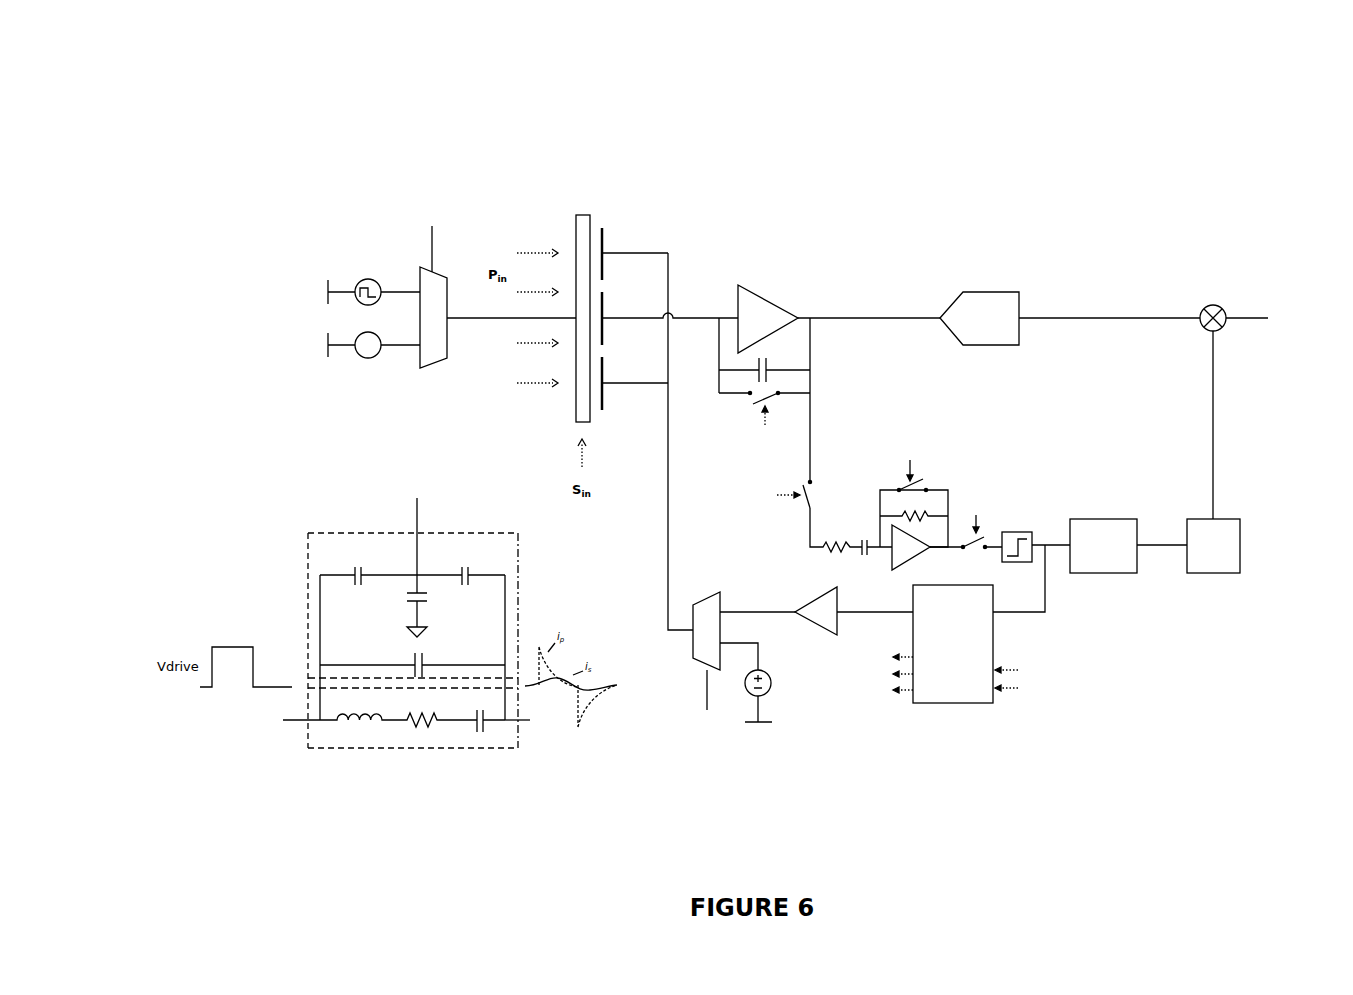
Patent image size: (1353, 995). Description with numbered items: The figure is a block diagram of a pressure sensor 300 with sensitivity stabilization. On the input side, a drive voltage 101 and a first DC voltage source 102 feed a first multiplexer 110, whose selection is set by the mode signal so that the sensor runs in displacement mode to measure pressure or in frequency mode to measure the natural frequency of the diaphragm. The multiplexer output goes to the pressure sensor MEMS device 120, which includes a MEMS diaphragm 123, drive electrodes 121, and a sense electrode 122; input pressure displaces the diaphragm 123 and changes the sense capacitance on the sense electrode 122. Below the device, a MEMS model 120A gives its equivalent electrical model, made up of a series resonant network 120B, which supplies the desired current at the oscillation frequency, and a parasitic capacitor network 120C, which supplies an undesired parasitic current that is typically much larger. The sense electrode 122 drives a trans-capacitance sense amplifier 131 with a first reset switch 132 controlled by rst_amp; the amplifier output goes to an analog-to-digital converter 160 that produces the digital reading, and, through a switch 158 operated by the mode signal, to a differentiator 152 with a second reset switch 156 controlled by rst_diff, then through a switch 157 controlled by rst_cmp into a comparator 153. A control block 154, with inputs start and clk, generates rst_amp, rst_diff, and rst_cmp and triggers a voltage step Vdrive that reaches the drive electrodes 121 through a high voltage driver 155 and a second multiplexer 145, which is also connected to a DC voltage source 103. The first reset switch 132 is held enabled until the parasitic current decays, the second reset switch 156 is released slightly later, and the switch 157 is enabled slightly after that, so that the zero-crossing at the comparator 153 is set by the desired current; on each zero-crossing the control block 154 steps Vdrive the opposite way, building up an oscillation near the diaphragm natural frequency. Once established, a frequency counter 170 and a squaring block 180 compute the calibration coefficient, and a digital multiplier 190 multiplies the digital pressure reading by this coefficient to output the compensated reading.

The drive voltage 101 is at (362, 279).
The first DC voltage source 102 is at (366, 366).
The DC voltage source 103 is at (772, 687).
The first multiplexer 110 is at (418, 263).
The pressure sensor MEMS device 120 is at (662, 165).
The MEMS model 120A is at (518, 475).
The series resonant network 120B is at (350, 752).
The parasitic capacitor network 120C is at (330, 533).
The drive electrodes 121 is at (615, 237).
The sense electrode 122 is at (615, 304).
The MEMS diaphragm 123 is at (570, 215).
The trans-capacitance sense amplifier 131 is at (765, 281).
The first reset switch 132 is at (745, 411).
The second multiplexer 145 is at (695, 666).
The differentiator 152 is at (953, 437).
The comparator 153 is at (1020, 518).
The control block 154 is at (952, 716).
The high voltage driver 155 is at (815, 588).
The second reset switch 156 is at (927, 481).
The switch 157 is at (972, 556).
The switch 158 is at (797, 507).
The analog-to-digital converter 160 is at (987, 290).
The frequency counter 170 is at (1110, 581).
The squaring block 180 is at (1213, 581).
The digital multiplier 190 is at (1211, 303).
The pressure sensor 300 is at (773, 850).